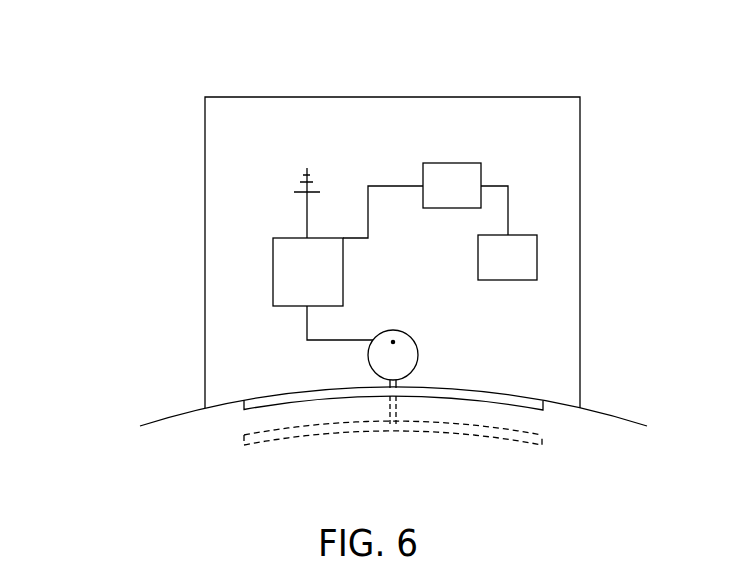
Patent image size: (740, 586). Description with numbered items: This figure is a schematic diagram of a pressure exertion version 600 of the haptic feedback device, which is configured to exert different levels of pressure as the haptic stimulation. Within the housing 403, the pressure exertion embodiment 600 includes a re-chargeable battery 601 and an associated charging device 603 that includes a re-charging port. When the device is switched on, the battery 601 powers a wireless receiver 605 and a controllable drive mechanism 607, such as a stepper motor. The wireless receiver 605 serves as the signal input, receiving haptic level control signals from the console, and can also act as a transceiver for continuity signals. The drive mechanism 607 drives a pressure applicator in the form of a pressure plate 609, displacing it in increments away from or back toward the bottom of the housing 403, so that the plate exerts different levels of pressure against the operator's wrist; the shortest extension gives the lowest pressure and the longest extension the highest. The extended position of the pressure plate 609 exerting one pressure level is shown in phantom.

The pressure exertion version 600 is at (152, 62).
The housing 403 is at (205, 247).
The re-chargeable battery 601 is at (451, 163).
The charging device 603 is at (537, 260).
The wireless receiver 605 is at (283, 287).
The controllable drive mechanism 607 is at (415, 340).
The pressure plate 609 is at (543, 410).